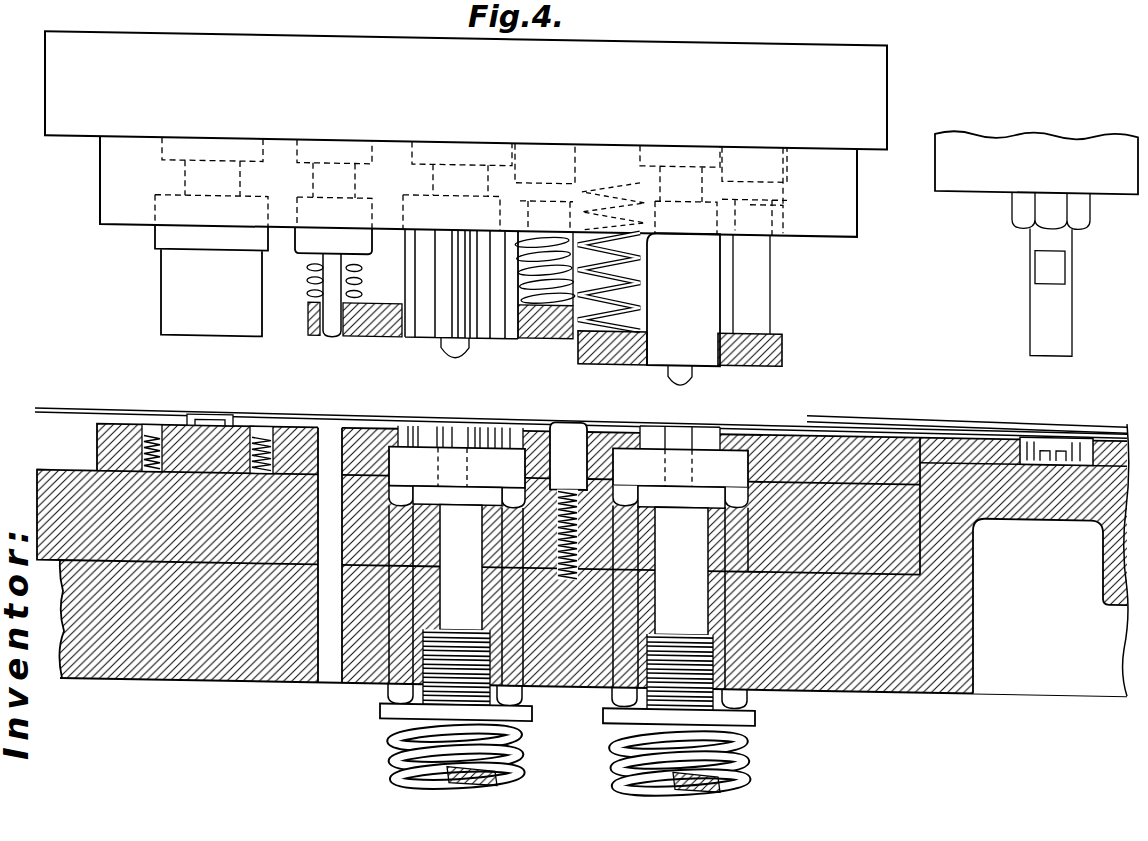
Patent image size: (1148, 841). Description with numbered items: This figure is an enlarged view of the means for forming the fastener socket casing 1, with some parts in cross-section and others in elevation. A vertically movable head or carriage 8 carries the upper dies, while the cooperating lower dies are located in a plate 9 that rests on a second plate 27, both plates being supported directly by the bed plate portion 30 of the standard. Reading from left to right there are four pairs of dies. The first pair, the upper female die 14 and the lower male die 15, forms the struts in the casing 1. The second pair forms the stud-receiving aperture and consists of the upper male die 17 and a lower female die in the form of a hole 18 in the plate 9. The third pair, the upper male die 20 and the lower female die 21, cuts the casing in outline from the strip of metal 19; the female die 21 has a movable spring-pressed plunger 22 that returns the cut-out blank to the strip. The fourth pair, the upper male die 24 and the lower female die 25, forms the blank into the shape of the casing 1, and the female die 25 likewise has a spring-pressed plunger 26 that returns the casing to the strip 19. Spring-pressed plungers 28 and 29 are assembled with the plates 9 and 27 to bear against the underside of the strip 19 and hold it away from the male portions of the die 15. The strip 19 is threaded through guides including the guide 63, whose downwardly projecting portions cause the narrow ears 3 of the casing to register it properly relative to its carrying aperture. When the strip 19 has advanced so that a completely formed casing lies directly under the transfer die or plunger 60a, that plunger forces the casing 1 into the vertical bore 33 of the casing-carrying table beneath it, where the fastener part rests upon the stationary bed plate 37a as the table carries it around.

The head or carriage 8 is at (857, 183).
The upper female die 14 is at (158, 272).
The upper male die 17 is at (333, 326).
The upper male die 20 is at (478, 334).
The upper male die 24 is at (703, 346).
The transfer die or plunger 60a is at (1030, 283).
The strip of metal 19 is at (96, 398).
The guide 63 is at (950, 403).
The plate 9 is at (292, 422).
The second plate 27 is at (60, 469).
The bed plate portion 30 is at (228, 662).
The spring-pressed plunger 28 is at (150, 420).
The lower male die 15 is at (215, 411).
The hole 18 is at (330, 424).
The lower female die 21 is at (387, 424).
The spring-pressed plunger 22 is at (421, 427).
The spring-pressed plunger 29 is at (570, 424).
The spring-pressed plunger 26 is at (675, 428).
The lower female die 25 is at (745, 422).
The bed plate 37a is at (1055, 485).
The narrow portions or ears 3 is at (1050, 420).
The vertical bore 33 is at (1063, 420).
The casing 1 is at (1083, 420).